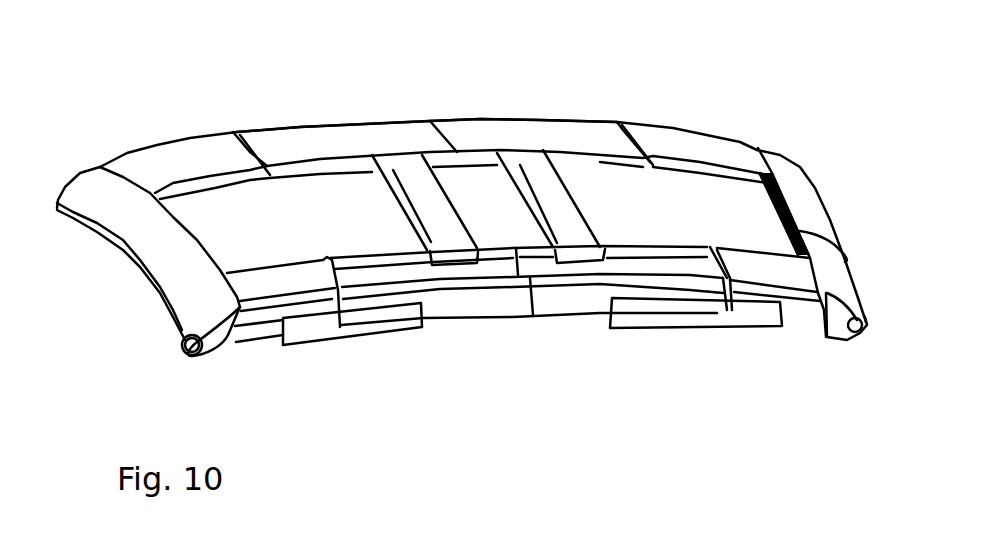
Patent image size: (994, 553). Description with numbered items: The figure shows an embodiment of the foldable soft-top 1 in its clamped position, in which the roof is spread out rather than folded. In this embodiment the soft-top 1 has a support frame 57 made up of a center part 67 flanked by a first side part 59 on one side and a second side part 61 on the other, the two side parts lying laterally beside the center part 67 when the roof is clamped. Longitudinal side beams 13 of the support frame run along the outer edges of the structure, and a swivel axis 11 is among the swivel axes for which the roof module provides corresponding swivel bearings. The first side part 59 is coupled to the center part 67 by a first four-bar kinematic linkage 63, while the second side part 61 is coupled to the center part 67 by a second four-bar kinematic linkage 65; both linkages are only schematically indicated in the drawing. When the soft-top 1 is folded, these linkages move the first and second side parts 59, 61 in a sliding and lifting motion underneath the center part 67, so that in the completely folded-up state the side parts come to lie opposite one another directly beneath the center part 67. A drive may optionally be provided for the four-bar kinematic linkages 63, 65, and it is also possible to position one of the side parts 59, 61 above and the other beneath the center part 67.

The soft-top 1 is at (460, 171).
The swivel axis 11 is at (330, 85).
The longitudinal side beam 13 is at (103, 220).
The support frame 57 is at (627, 98).
The first side part 59 is at (140, 253).
The second side part 61 is at (838, 256).
The first four-bar kinematic linkage 63 is at (367, 338).
The second four-bar kinematic linkage 65 is at (723, 335).
The center part 67 is at (490, 125).